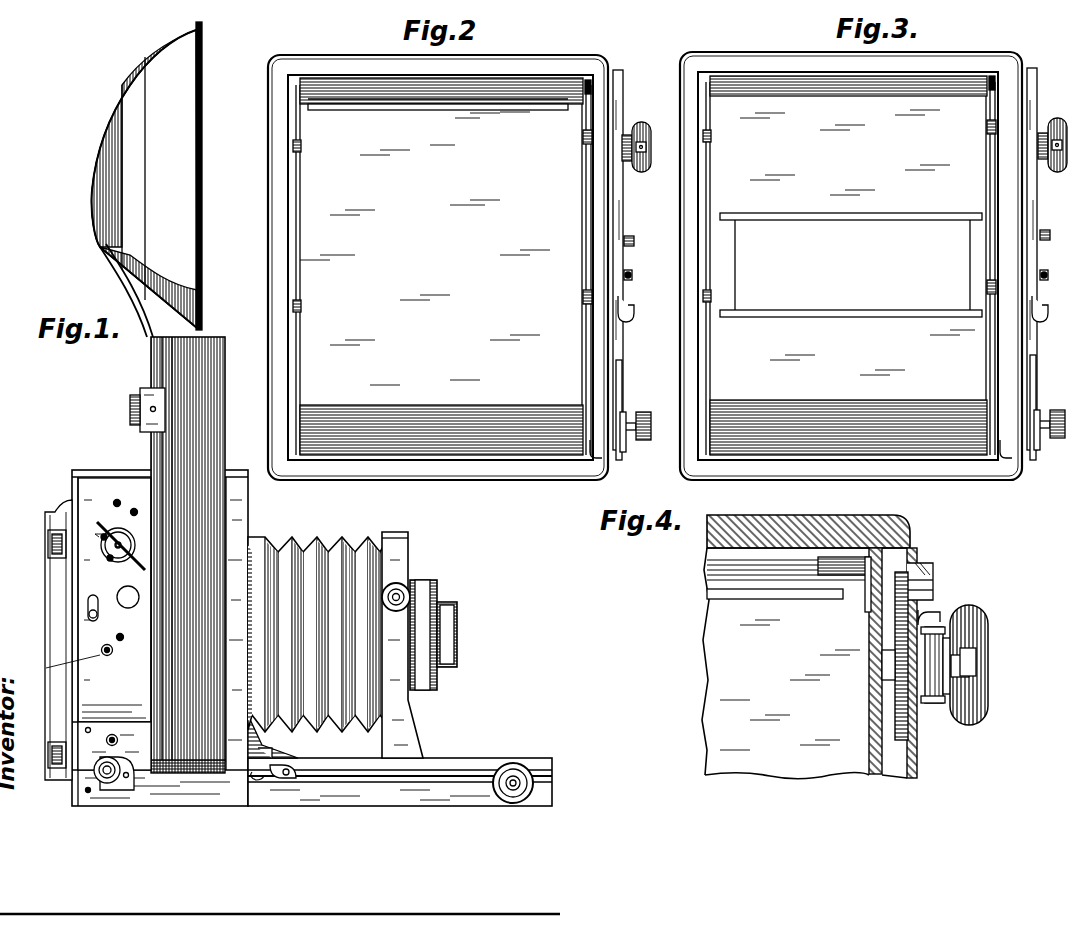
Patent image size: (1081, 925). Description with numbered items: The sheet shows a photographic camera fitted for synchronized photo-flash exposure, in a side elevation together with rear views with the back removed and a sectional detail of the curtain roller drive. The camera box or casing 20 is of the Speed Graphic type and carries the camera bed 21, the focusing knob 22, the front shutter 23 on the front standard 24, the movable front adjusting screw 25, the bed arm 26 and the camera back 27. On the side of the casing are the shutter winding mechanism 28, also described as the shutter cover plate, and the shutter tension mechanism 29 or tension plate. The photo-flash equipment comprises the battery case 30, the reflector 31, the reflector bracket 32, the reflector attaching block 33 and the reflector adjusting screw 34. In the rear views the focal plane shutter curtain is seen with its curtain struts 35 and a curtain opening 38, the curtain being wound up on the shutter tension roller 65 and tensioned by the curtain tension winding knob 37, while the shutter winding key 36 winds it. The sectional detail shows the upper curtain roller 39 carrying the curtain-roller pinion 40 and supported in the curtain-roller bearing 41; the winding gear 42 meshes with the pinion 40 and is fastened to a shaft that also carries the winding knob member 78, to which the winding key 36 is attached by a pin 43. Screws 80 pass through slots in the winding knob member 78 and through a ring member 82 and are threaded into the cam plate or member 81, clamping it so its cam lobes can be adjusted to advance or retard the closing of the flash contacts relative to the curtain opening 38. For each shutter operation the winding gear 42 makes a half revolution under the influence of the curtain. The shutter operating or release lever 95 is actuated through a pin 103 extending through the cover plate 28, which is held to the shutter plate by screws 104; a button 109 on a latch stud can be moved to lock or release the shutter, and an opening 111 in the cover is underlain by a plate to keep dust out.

In FIG. 1, the camera box or casing 20 is at (250, 498).
In FIG. 2, the camera box or casing 20 is at (270, 199).
In FIG. 3, the camera box or casing 20 is at (682, 197).
In FIG. 4, the camera box or casing 20 is at (836, 516).
In FIG. 1, the camera bed 21 is at (554, 788).
In FIG. 1, the focusing knob 22 is at (520, 768).
In FIG. 1, the front shutter 23 is at (445, 627).
In FIG. 1, the front standard 24 is at (406, 545).
In FIG. 1, the movable front adjusting screw 25 is at (402, 588).
In FIG. 1, the bed arm 26 is at (278, 748).
In FIG. 1, the camera back 27 is at (48, 567).
In FIG. 1, the shutter winding mechanism 28 is at (78, 490).
In FIG. 2, the shutter winding mechanism 28 is at (622, 82).
In FIG. 3, the shutter winding mechanism 28 is at (1036, 84).
In FIG. 1, the shutter tension mechanism 29 is at (152, 740).
In FIG. 2, the shutter tension mechanism 29 is at (622, 376).
In FIG. 3, the shutter tension mechanism 29 is at (1036, 374).
In FIG. 1, the battery case 30 is at (226, 406).
In FIG. 1, the reflector 31 is at (180, 134).
In FIG. 1, the reflector bracket 32 is at (112, 262).
In FIG. 1, the reflector attaching block 33 is at (146, 425).
In FIG. 1, the reflector adjusting screw 34 is at (130, 406).
In FIG. 2, the curtain struts 35 is at (444, 110).
In FIG. 3, the curtain struts 35 is at (906, 220).
In FIG. 4, the curtain struts 35 is at (782, 596).
In FIG. 1, the shutter winding key 36 is at (118, 568).
In FIG. 2, the shutter winding key 36 is at (648, 128).
In FIG. 3, the shutter winding key 36 is at (1064, 118).
In FIG. 4, the shutter winding key 36 is at (985, 665).
In FIG. 1, the curtain tension winding knob 37 is at (95, 783).
In FIG. 2, the curtain tension winding knob 37 is at (642, 412).
In FIG. 3, the curtain tension winding knob 37 is at (1056, 410).
In FIG. 2, the curtain opening 38 is at (380, 100).
In FIG. 3, the curtain opening 38 is at (836, 300).
In FIG. 4, the curtain opening 38 is at (743, 580).
In FIG. 2, the upper curtain roller 39 is at (592, 90).
In FIG. 3, the upper curtain roller 39 is at (998, 86).
In FIG. 4, the upper curtain roller 39 is at (863, 595).
In FIG. 4, the curtain-roller pinion 40 is at (928, 566).
In FIG. 4, the curtain-roller bearing 41 is at (932, 585).
In FIG. 4, the winding gear 42 is at (928, 746).
In FIG. 4, the pin 43 is at (970, 660).
In FIG. 2, the shutter tension roller 65 is at (596, 445).
In FIG. 3, the shutter tension roller 65 is at (1008, 445).
In FIG. 1, the winding knob member 78 is at (101, 537).
In FIG. 2, the winding knob member 78 is at (630, 134).
In FIG. 3, the winding knob member 78 is at (1044, 132).
In FIG. 4, the winding knob member 78 is at (940, 705).
In FIG. 1, the screws 80 is at (108, 560).
In FIG. 4, the screws 80 is at (946, 632).
In FIG. 1, the cam plate or member 81 is at (152, 503).
In FIG. 4, the cam plate or member 81 is at (944, 695).
In FIG. 1, the ring member 82 is at (121, 554).
In FIG. 4, the ring member 82 is at (932, 628).
In FIG. 2, the shutter operating or release lever 95 is at (632, 312).
In FIG. 3, the shutter operating or release lever 95 is at (1046, 312).
In FIG. 1, the pin 103 is at (88, 610).
In FIG. 2, the pin 103 is at (634, 238).
In FIG. 3, the pin 103 is at (1050, 234).
In FIG. 1, the screws 104 is at (114, 504).
In FIG. 1, the button 109 is at (101, 651).
In FIG. 2, the button 109 is at (634, 275).
In FIG. 3, the button 109 is at (1052, 275).
In FIG. 1, the opening 111 is at (59, 669).